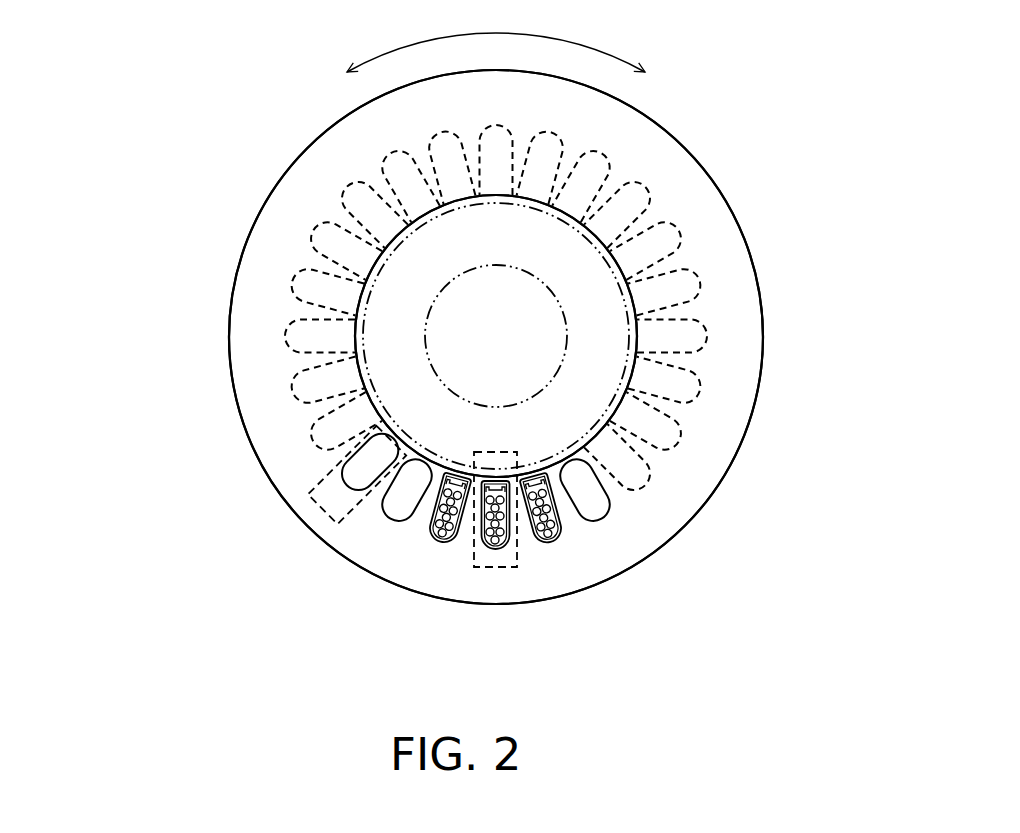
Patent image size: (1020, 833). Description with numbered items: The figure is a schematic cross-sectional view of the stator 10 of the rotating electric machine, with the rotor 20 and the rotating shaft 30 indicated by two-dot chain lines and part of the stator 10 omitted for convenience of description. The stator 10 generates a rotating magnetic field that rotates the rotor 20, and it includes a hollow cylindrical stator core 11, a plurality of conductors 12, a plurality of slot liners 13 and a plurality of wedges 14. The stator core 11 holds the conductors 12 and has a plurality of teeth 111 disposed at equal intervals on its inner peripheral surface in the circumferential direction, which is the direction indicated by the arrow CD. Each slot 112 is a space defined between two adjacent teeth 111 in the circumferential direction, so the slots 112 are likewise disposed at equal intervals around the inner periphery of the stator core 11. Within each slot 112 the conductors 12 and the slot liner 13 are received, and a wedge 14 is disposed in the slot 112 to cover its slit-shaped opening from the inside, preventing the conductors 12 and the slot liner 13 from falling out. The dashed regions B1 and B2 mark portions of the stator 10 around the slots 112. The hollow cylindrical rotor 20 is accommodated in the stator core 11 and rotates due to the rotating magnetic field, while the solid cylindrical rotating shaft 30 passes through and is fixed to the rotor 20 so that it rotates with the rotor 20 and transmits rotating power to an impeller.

The stator 10 is at (160, 98).
The stator core 11 is at (514, 337).
The teeth 111 is at (493, 386).
The slots 112 is at (496, 336).
The conductors 12 is at (511, 571).
The slot liners 13 is at (513, 563).
The wedges 14 is at (490, 455).
The rotor 20 is at (508, 251).
The rotating shaft 30 is at (508, 339).
The region B1 is at (397, 470).
The region B2 is at (502, 469).
The circumferential direction arrow CD is at (496, 37).